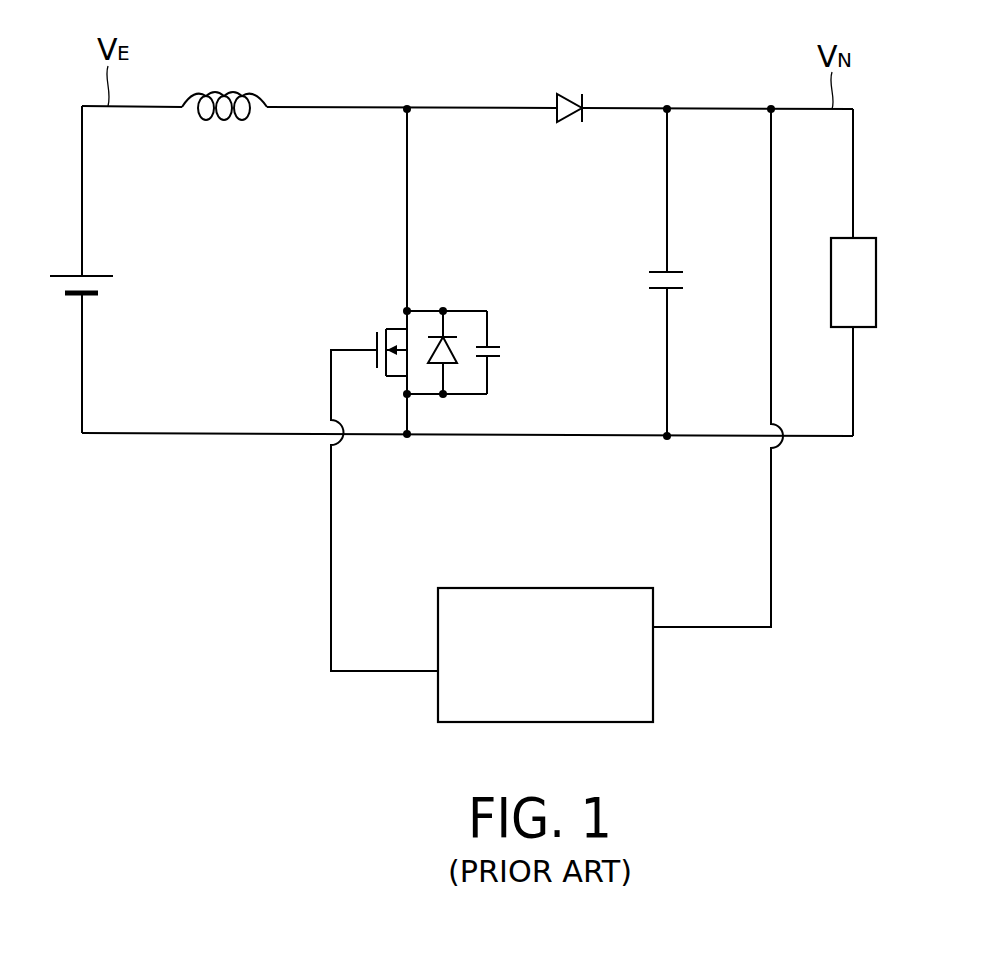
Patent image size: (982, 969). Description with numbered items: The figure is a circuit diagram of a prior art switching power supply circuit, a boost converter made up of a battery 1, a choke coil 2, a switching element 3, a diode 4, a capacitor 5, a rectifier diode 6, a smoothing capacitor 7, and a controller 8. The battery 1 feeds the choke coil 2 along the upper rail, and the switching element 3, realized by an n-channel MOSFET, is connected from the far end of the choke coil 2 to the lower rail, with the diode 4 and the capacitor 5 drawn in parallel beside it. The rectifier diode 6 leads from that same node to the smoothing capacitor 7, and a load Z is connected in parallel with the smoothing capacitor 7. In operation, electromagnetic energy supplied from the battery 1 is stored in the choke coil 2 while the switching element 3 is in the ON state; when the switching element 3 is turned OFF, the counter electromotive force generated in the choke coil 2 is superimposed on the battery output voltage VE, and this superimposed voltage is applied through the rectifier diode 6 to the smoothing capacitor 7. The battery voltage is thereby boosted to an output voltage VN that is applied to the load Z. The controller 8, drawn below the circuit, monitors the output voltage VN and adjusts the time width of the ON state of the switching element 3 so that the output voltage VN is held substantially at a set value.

The battery 1 is at (64, 274).
The choke coil 2 is at (218, 94).
The switching element 3 is at (382, 326).
The diode 4 is at (430, 372).
The capacitor 5 is at (478, 362).
The rectifier diode 6 is at (571, 100).
The smoothing capacitor 7 is at (672, 270).
The controller 8 is at (547, 587).
The load Z is at (876, 282).